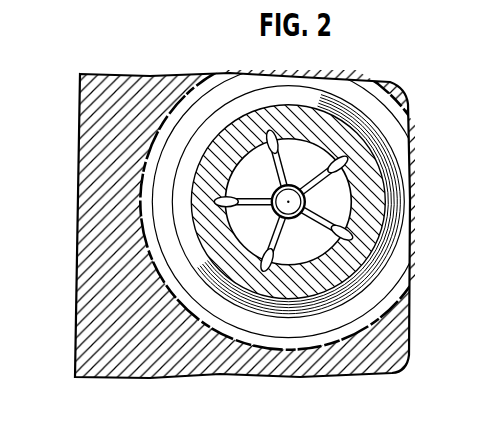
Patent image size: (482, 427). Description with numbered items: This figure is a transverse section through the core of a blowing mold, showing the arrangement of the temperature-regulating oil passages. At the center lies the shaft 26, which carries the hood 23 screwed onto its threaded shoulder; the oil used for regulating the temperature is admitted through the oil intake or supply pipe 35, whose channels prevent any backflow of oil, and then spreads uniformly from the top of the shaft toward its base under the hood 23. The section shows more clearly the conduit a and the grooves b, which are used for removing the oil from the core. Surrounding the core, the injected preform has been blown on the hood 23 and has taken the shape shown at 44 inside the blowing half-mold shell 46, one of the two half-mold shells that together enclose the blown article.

The hood 23 is at (372, 176).
The shaft 26 is at (340, 210).
The oil intake or supply pipe 35 is at (294, 215).
The blown preform shape 44 is at (146, 171).
The blowing half-mold shell 46 is at (97, 247).
The conduit a is at (256, 206).
The grooves b is at (226, 203).